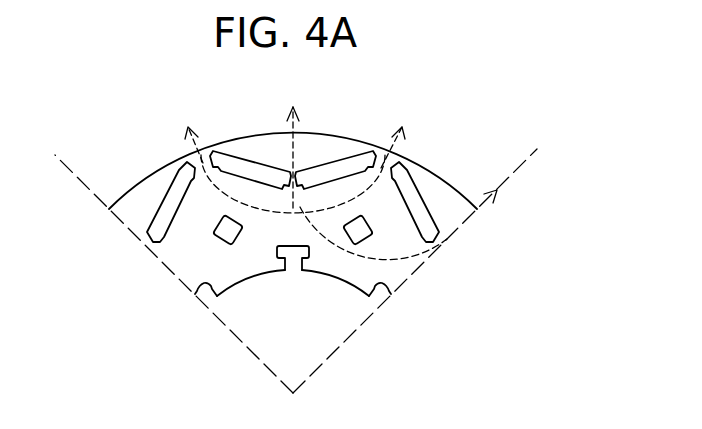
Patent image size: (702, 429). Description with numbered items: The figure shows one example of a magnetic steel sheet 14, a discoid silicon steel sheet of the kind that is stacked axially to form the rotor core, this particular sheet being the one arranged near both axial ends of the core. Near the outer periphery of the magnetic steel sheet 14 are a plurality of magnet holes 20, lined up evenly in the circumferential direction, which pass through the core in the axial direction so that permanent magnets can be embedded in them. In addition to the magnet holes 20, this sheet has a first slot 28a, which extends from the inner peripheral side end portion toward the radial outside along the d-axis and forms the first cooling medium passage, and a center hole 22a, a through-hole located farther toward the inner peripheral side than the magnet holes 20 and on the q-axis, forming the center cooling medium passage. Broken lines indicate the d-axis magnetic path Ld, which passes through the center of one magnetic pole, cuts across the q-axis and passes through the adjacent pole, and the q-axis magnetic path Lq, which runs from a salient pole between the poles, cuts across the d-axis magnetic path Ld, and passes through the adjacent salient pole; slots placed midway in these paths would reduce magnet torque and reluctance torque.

The magnetic steel sheet 14 is at (148, 187).
The magnet hole 20 is at (340, 165).
The center hole 22a is at (363, 232).
The first slot 28a is at (293, 263).
The d-axis magnetic path Ld is at (324, 173).
The q-axis magnetic path Lq is at (291, 132).